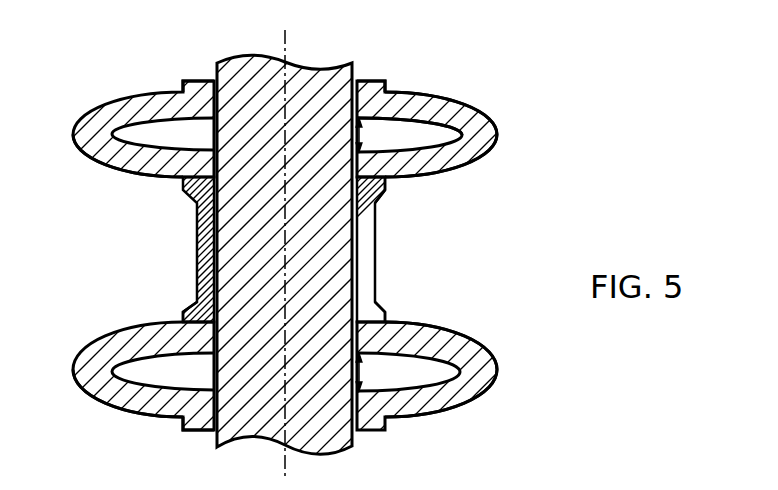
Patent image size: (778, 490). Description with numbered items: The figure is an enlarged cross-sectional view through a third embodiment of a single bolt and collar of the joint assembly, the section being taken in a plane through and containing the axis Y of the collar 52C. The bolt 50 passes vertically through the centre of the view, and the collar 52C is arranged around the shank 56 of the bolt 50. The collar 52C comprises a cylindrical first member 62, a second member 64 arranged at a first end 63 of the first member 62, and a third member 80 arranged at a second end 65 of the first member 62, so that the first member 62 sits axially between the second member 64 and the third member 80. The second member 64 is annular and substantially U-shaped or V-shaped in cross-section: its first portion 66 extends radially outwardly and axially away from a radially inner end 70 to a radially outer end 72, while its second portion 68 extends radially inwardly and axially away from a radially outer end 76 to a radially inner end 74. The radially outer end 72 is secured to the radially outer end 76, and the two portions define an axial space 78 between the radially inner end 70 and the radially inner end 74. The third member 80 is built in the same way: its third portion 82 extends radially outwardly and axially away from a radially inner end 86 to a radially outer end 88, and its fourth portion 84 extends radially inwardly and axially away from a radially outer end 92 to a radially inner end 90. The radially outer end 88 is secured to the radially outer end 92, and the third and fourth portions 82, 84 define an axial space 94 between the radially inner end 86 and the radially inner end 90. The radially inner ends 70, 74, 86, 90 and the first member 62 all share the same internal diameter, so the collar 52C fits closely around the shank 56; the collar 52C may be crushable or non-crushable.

The collar 52C is at (528, 246).
The axis Y is at (290, 42).
The bolt 50 is at (358, 98).
The shank 56 is at (355, 80).
The third member 80 is at (485, 128).
The third portion 82 is at (440, 167).
The fourth portion 84 is at (427, 112).
The axial space 94 is at (365, 136).
The radially outer end 88 is at (90, 142).
The radially inner end 90 is at (196, 81).
The radially outer end 92 is at (96, 110).
The first member 62 is at (372, 232).
The first end 63 is at (385, 305).
The second end 65 is at (382, 195).
The radially inner end 70 is at (185, 312).
The radially inner end 86 is at (185, 189).
The second member 64 is at (496, 373).
The first portion 66 is at (445, 342).
The second portion 68 is at (422, 403).
The axial space 78 is at (365, 374).
The radially outer end 72 is at (90, 350).
The radially inner end 74 is at (187, 430).
The radially outer end 76 is at (88, 384).